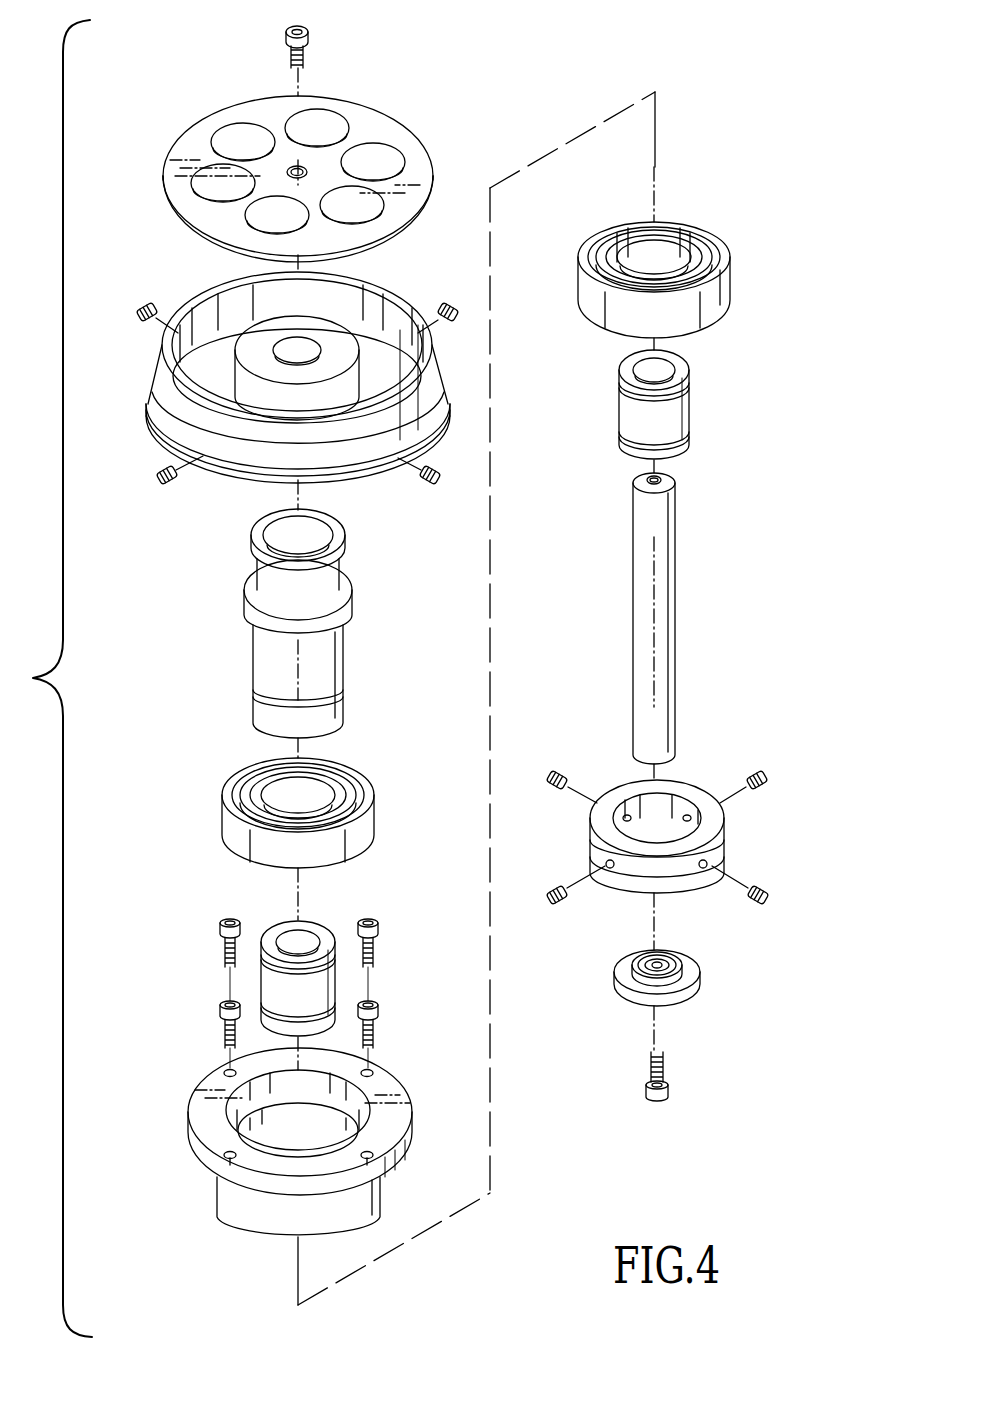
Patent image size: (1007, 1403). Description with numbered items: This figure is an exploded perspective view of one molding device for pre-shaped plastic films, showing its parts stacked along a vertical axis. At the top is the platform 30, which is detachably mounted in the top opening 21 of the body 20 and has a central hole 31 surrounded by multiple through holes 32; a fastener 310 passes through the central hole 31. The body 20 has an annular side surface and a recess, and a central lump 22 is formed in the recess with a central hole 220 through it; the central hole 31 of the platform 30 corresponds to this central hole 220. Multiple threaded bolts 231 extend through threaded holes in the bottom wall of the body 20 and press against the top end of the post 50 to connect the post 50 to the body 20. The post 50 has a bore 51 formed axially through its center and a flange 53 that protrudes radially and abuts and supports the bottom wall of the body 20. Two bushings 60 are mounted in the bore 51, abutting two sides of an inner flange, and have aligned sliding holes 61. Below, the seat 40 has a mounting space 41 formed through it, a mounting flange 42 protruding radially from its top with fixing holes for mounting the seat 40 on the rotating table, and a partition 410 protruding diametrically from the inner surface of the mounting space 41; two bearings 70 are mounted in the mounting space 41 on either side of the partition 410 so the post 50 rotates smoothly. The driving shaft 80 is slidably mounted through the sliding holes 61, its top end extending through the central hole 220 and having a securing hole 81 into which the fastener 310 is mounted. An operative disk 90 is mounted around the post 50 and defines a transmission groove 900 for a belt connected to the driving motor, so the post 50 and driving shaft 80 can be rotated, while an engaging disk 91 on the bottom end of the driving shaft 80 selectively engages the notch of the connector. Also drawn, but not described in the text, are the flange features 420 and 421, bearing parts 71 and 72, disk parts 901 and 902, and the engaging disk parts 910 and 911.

The body 20 is at (315, 387).
The top opening 21 is at (210, 310).
The central lump 22 is at (299, 387).
The central hole 220 is at (305, 348).
The threaded bolts 231 is at (437, 470).
The platform 30 is at (315, 162).
The central hole 31 is at (293, 168).
The through holes 32 is at (388, 163).
The fastener 310 is at (308, 36).
The seat 40 is at (298, 1135).
The mounting space 41 is at (328, 1090).
The mounting flange 42 is at (400, 1112).
The partition 410 is at (260, 1125).
The flange holes 420 is at (225, 1072).
The cap screws 421 is at (222, 1028).
The post 50 is at (300, 614).
The bore 51 is at (322, 533).
The flange 53 is at (352, 610).
The bushings 60 is at (499, 693).
The sliding holes 61 is at (285, 933).
The bearings 70 is at (506, 527).
The inner race of bearing 71 is at (265, 805).
The outer race of bearing 72 is at (357, 845).
The driving shaft 80 is at (699, 614).
The securing hole 81 is at (662, 478).
The operative disk 90 is at (695, 837).
The transmission groove 900 is at (725, 852).
The screw holes of collar ring 901 is at (712, 872).
The set screws of collar ring 902 is at (765, 892).
The engaging disk 91 is at (659, 977).
The boss of end cap 910 is at (640, 962).
The end cap screw 911 is at (645, 1083).